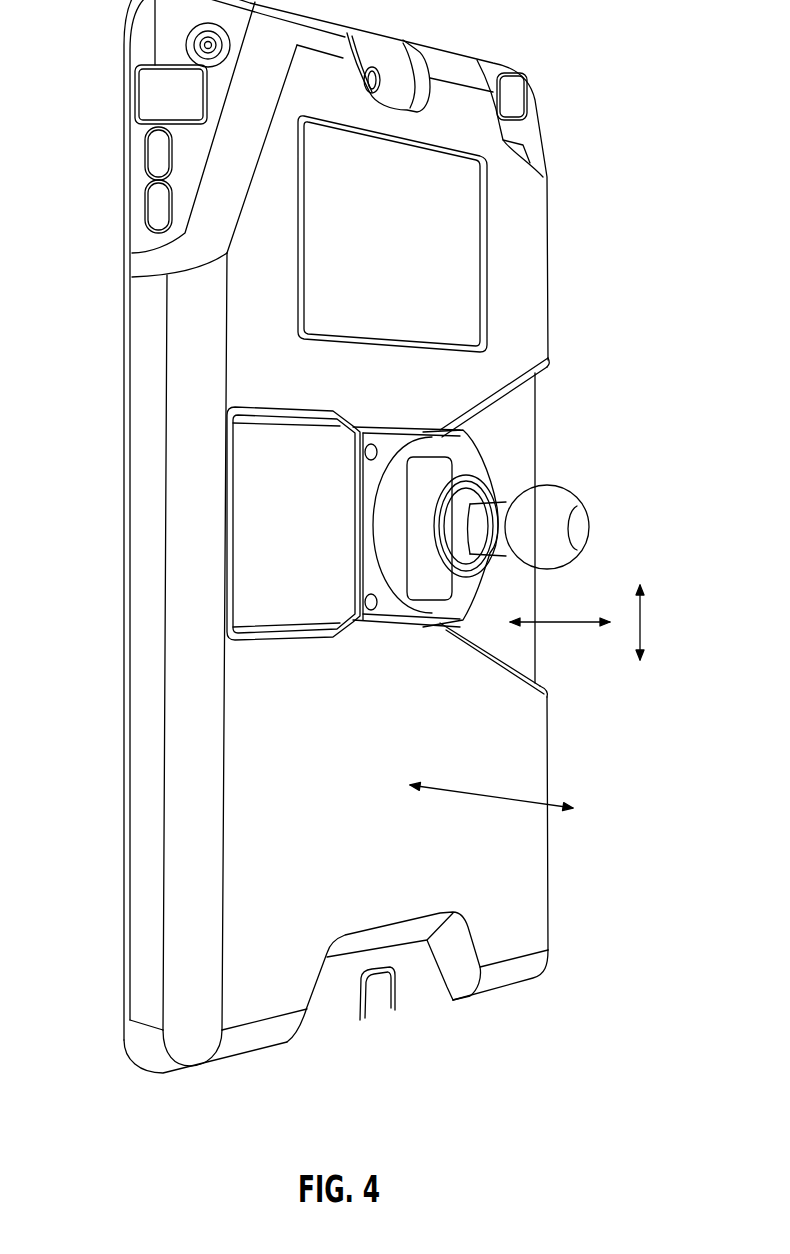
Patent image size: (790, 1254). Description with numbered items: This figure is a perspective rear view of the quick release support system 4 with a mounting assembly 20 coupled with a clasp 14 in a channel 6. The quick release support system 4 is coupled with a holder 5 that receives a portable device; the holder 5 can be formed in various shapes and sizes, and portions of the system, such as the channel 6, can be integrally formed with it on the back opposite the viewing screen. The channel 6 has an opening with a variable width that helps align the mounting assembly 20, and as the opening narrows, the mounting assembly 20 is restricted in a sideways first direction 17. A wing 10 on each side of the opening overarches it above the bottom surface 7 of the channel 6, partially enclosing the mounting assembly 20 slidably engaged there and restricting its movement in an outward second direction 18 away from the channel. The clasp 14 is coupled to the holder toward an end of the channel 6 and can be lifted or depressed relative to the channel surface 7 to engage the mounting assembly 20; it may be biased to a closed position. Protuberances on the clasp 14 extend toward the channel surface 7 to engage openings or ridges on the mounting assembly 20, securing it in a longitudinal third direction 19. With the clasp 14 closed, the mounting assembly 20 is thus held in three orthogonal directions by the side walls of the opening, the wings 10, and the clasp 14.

The quick release support system 4 is at (555, 291).
The holder 5 is at (533, 752).
The channel 6 is at (512, 658).
The bottom surface of the channel 7 is at (517, 608).
The wing 10 is at (412, 622).
The clasp 14 is at (270, 555).
The sideways first direction 17 is at (658, 622).
The outward second direction 18 is at (491, 788).
The longitudinal third direction 19 is at (560, 637).
The mounting assembly 20 is at (467, 462).